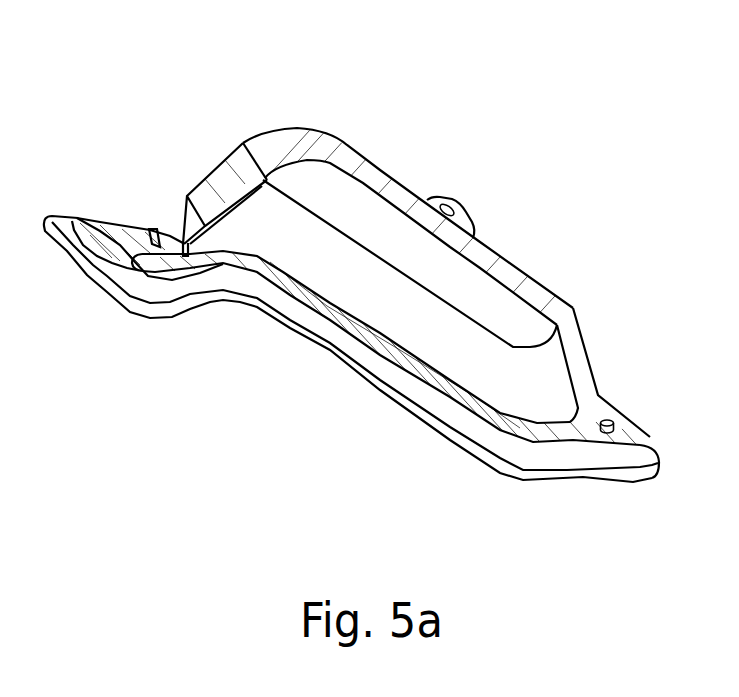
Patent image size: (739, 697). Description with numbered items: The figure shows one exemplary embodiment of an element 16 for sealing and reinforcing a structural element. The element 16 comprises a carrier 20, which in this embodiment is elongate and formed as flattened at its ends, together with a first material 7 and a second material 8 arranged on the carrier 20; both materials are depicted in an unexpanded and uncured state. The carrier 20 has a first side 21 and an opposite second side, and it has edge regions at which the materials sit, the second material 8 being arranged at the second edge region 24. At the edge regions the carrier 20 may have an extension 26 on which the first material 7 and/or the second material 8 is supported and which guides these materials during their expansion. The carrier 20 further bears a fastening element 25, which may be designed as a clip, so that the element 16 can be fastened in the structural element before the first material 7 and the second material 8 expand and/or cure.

The element for sealing and reinforcing 16 is at (190, 88).
The first material 7 is at (297, 133).
The second material 8 is at (567, 450).
The carrier 20 is at (485, 302).
The first side 21 is at (352, 217).
The second edge region 24 is at (433, 343).
The fastening element 25 is at (455, 206).
The extension 26 is at (463, 440).